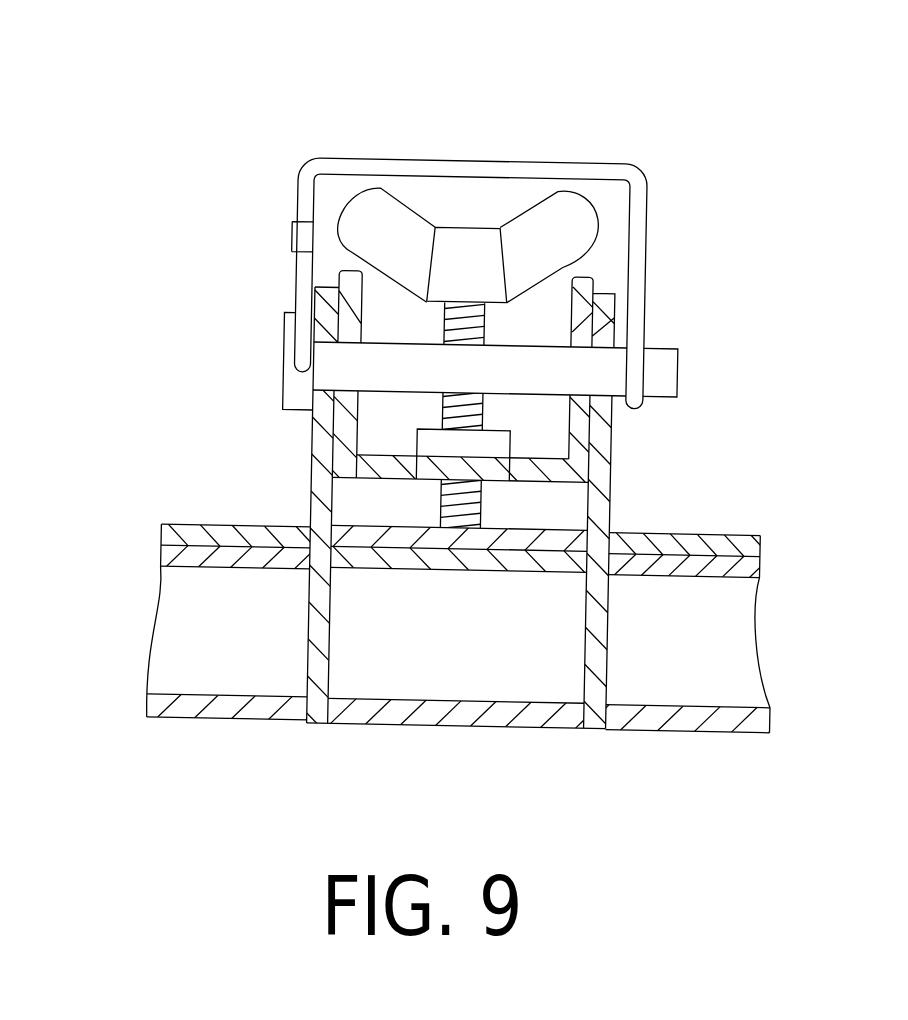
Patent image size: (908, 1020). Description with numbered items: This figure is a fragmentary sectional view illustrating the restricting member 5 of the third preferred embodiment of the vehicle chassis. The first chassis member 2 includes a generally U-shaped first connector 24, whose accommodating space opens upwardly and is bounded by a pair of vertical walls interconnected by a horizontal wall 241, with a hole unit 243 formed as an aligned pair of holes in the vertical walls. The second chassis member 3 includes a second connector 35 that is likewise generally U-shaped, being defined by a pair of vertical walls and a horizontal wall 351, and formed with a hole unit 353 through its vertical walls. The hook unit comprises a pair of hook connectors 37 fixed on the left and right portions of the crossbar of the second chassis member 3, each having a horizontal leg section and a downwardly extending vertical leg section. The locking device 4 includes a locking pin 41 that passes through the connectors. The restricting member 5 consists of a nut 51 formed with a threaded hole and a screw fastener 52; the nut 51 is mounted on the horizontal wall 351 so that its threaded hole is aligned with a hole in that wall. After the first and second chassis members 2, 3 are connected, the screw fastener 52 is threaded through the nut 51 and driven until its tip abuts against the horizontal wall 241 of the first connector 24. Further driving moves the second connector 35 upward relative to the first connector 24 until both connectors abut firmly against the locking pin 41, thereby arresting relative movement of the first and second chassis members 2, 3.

The first chassis member 2 is at (266, 754).
The first connector 24 is at (525, 510).
The horizontal wall 241 is at (490, 545).
The hole unit 243 is at (323, 397).
The second chassis member 3 is at (548, 448).
The second connector 35 is at (398, 447).
The horizontal wall 351 is at (385, 468).
The hole unit 353 is at (343, 330).
The hook connectors 37 is at (187, 535).
The locking device 4 is at (596, 144).
The locking pin 41 is at (392, 348).
The restricting member 5 is at (488, 199).
The nut 51 is at (492, 433).
The screw fastener 52 is at (462, 257).